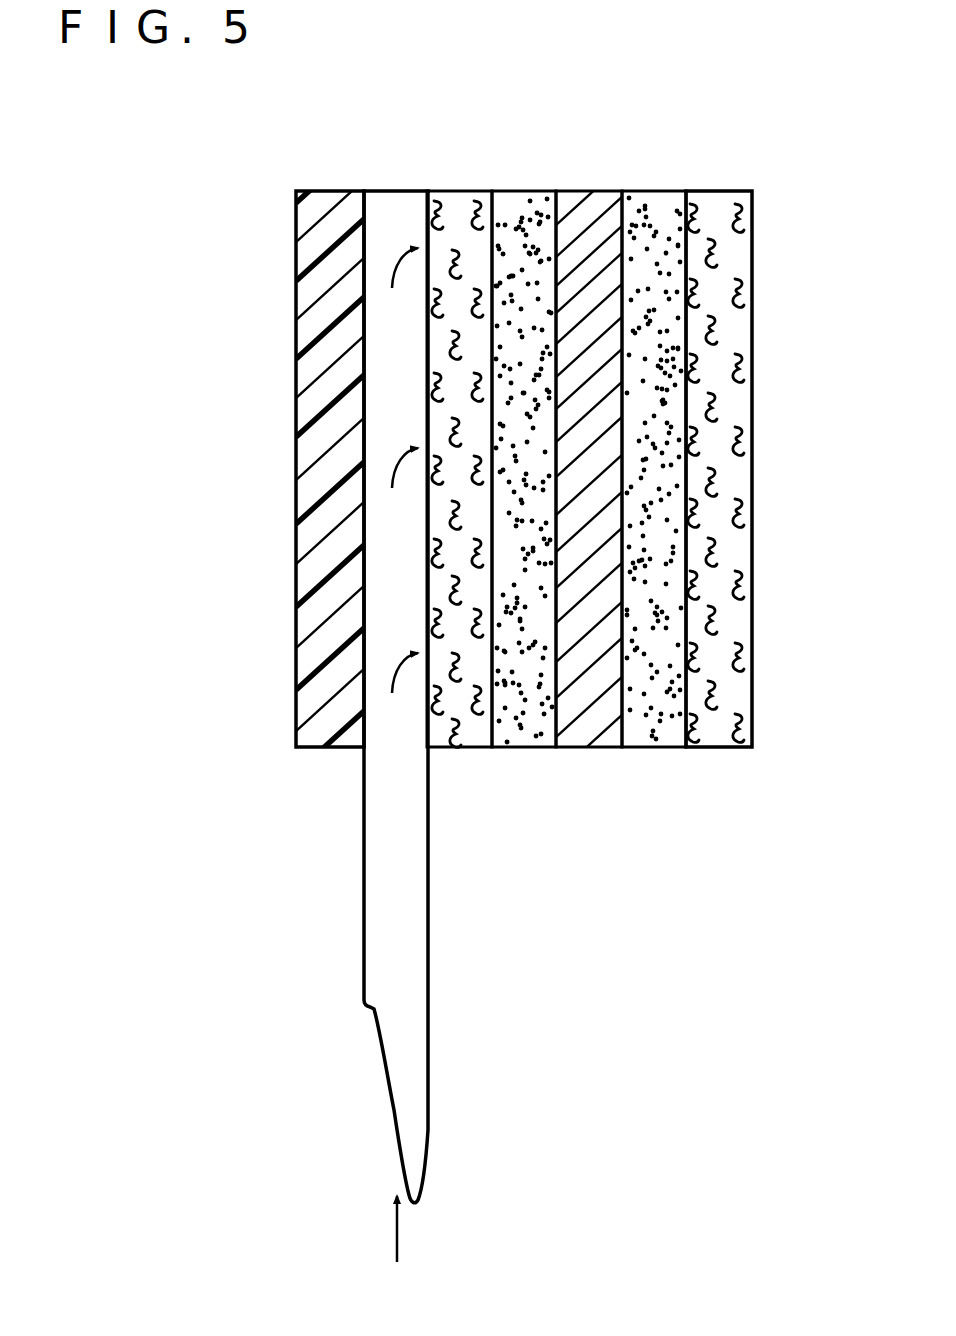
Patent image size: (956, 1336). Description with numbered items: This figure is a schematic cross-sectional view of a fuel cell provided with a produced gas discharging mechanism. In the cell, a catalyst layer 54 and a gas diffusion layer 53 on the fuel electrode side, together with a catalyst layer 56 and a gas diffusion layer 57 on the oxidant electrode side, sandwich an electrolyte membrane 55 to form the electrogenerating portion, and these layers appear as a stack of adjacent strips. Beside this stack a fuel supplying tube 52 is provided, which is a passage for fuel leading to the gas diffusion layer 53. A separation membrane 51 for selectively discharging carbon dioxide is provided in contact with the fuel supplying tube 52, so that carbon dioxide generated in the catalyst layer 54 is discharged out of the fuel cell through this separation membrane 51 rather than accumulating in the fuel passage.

The separation membrane 51 is at (328, 545).
The fuel supplying tube 52 is at (398, 971).
The gas diffusion layer 53 is at (472, 725).
The catalyst layer 54 is at (537, 725).
The electrolyte membrane 55 is at (600, 705).
The catalyst layer 56 is at (655, 628).
The gas diffusion layer 57 is at (718, 522).